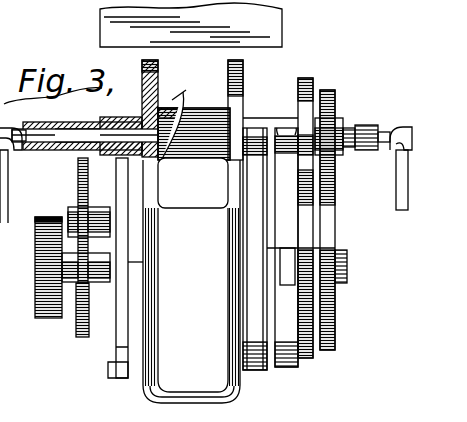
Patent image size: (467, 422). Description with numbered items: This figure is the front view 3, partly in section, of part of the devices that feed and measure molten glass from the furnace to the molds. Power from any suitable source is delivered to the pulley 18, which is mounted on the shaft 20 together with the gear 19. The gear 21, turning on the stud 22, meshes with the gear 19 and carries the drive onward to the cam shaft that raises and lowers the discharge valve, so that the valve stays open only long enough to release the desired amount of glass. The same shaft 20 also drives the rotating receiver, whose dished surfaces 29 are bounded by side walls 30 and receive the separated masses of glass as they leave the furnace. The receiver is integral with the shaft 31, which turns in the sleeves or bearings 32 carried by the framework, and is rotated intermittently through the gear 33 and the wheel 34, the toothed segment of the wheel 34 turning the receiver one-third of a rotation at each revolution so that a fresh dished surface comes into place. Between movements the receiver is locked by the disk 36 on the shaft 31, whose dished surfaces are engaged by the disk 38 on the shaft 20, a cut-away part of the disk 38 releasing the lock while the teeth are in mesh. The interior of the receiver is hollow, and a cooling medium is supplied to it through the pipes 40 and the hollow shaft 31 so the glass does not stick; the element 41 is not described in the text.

The front view 3 is at (283, 25).
The pulley 18 is at (45, 318).
The gear 19 is at (89, 328).
The shaft 20 is at (348, 262).
The gear 21 is at (78, 175).
The stud 22 is at (100, 207).
The dished surfaces 29 is at (194, 139).
The side walls 30 is at (159, 70).
The shaft 31 is at (75, 130).
The sleeves or bearings 32 is at (259, 122).
The gear 33 is at (336, 97).
The wheel 34 is at (336, 320).
The disk 36 is at (309, 80).
The disk 38 is at (305, 358).
The pipes 40 is at (14, 192).
The cylinder 41 is at (191, 281).